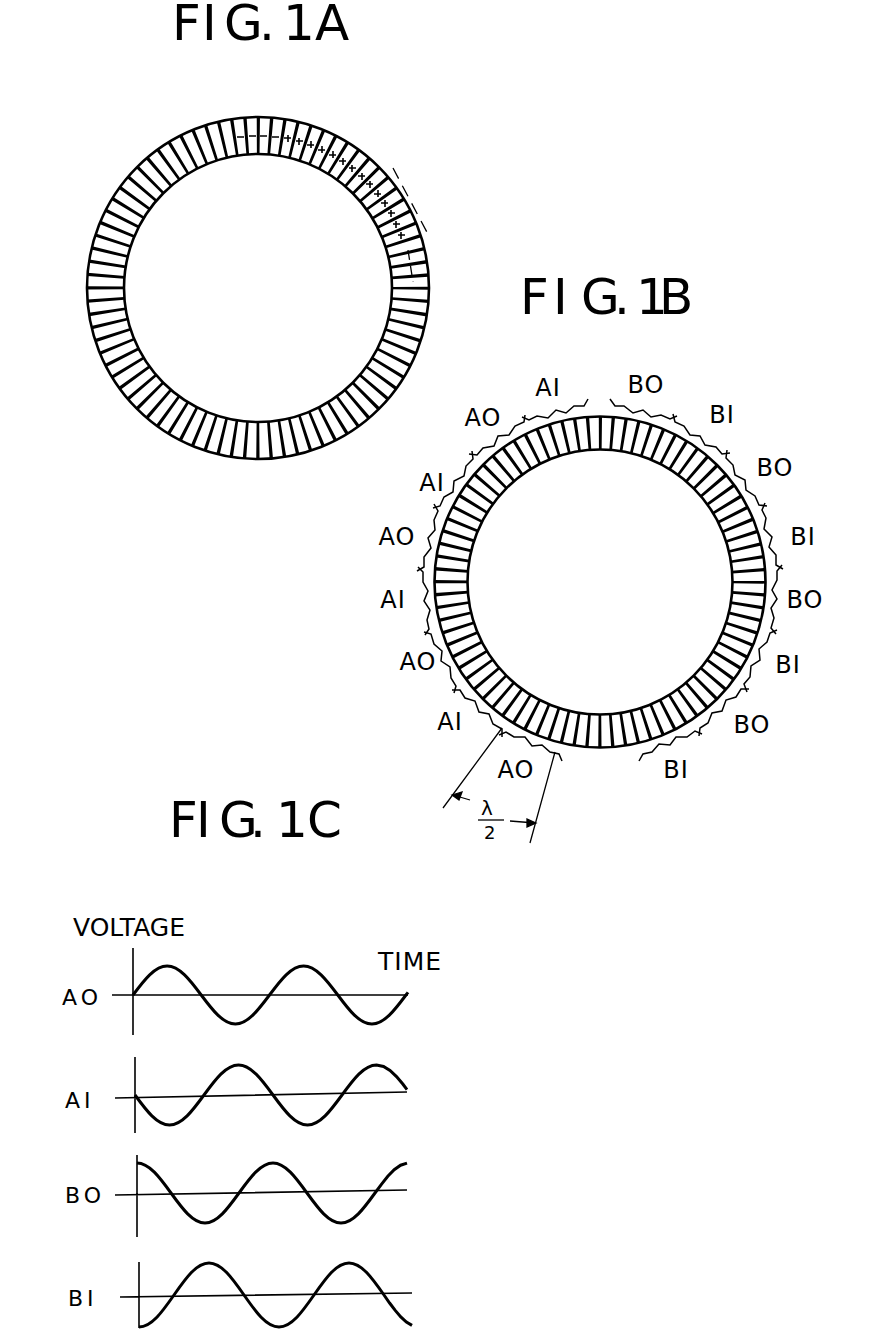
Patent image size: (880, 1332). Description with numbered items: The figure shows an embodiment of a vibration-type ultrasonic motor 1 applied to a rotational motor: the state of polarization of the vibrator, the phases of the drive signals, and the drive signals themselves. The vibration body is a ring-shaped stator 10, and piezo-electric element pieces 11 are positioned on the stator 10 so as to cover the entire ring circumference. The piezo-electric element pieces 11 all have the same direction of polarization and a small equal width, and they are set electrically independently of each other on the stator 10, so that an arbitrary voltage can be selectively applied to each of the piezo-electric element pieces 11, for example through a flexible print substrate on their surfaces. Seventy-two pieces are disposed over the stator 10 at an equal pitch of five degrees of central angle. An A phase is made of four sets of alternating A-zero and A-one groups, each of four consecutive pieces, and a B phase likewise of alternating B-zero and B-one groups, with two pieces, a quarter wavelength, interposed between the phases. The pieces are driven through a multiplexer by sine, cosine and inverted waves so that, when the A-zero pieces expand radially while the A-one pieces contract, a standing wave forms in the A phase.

In FIG. 1A, the piezoelectric ring element 1 is at (337, 134).
In FIG. 1A, the stator 10 is at (420, 218).
In FIG. 1B, the stator 10 is at (657, 425).
In FIG. 1A, the piezo-electric element pieces 11 is at (352, 148).
In FIG. 1B, the piezo-electric element pieces 11 is at (668, 430).